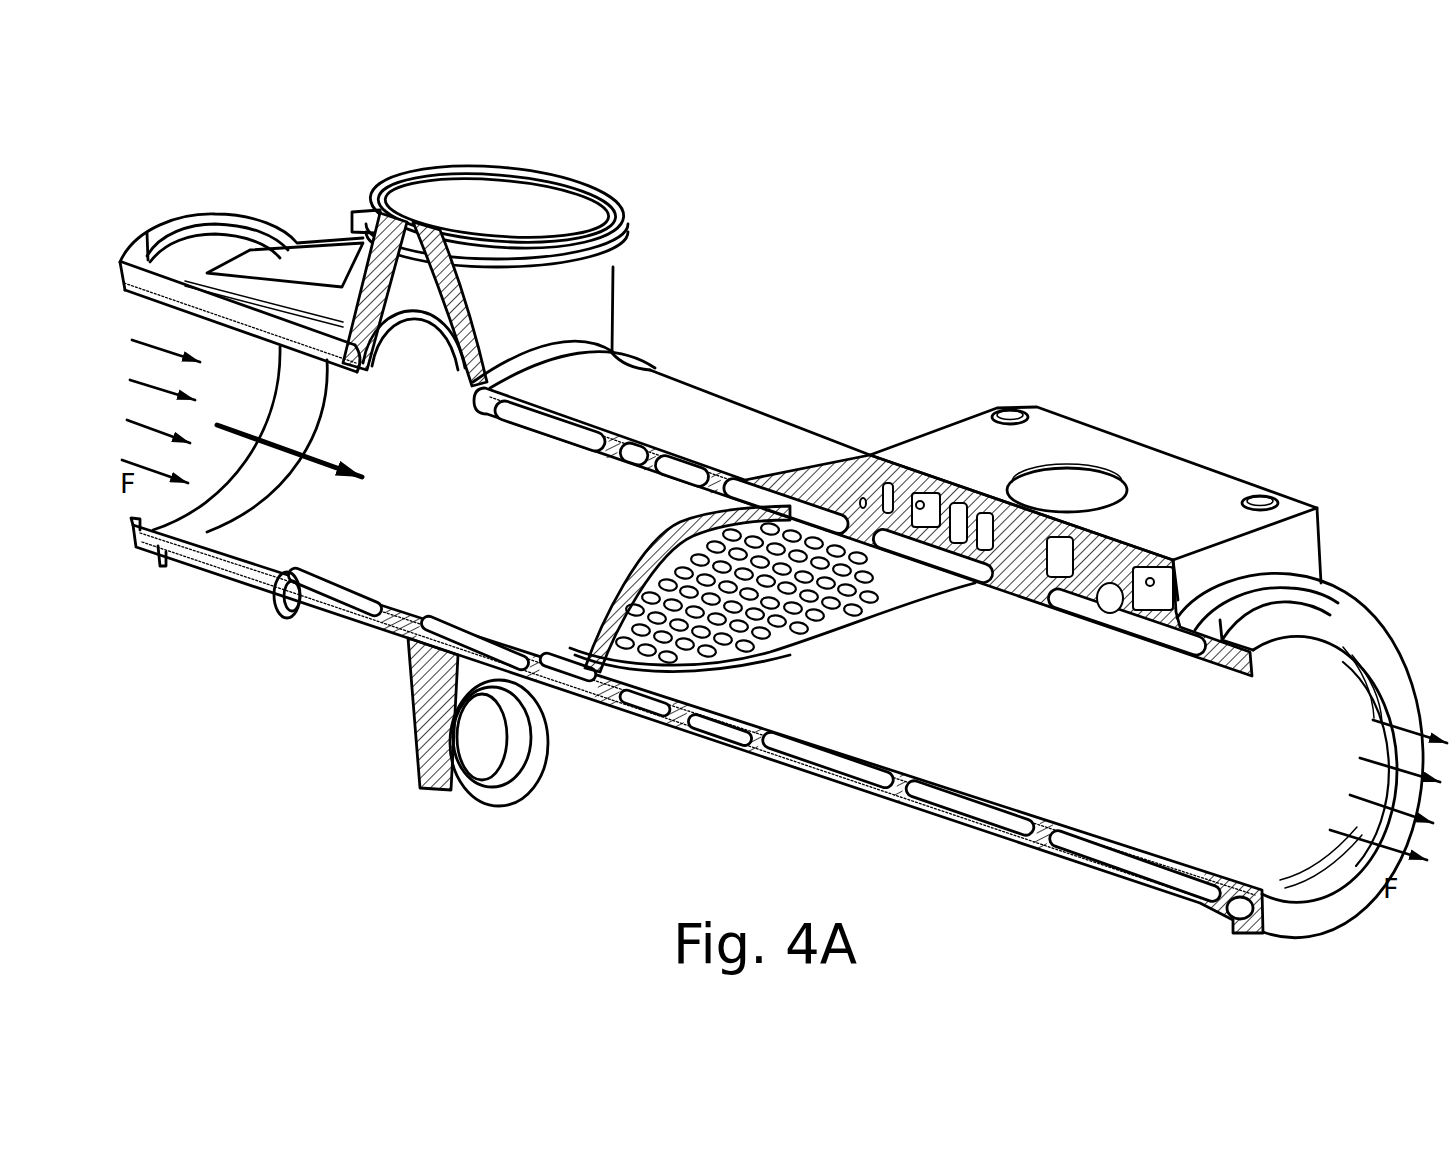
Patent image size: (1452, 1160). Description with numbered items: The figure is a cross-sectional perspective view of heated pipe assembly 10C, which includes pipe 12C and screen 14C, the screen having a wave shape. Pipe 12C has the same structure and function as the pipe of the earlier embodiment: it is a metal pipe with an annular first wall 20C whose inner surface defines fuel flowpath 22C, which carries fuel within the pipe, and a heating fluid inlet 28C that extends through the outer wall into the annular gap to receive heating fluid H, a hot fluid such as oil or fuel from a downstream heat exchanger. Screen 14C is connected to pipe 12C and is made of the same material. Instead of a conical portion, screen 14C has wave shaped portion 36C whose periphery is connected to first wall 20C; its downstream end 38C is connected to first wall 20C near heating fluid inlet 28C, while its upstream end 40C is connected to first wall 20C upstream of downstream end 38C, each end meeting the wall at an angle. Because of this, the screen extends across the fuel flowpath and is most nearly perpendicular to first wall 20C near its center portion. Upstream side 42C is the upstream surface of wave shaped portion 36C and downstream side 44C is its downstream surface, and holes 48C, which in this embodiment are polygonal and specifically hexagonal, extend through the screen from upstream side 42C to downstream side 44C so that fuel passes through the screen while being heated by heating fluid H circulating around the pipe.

The heated pipe assembly 10C is at (222, 167).
The pipe 12C is at (847, 328).
The screen 14C is at (712, 672).
The first wall 20C is at (613, 447).
The fuel flowpath 22C is at (287, 428).
The heating fluid inlet 28C is at (283, 613).
The wave shaped portion 36C is at (650, 640).
The downstream end 38C is at (943, 587).
The upstream end 40C is at (455, 700).
The upstream side 42C is at (545, 598).
The downstream side 44C is at (823, 593).
The holes 48C is at (804, 583).
The heating fluid H is at (278, 590).